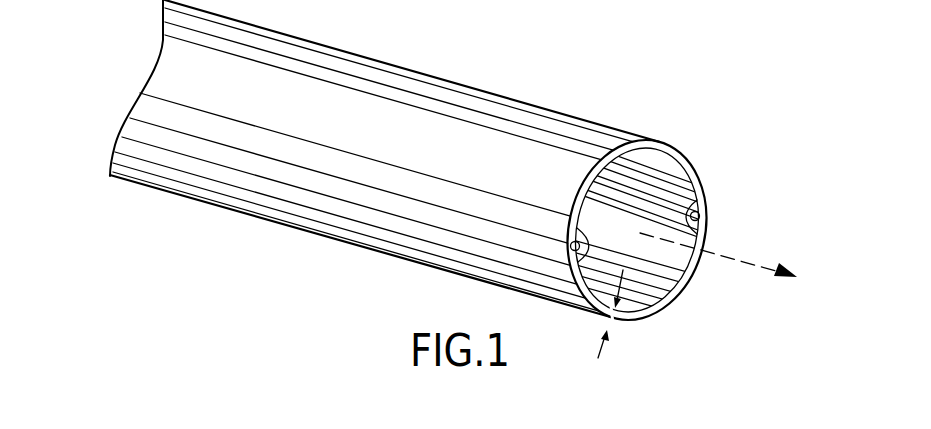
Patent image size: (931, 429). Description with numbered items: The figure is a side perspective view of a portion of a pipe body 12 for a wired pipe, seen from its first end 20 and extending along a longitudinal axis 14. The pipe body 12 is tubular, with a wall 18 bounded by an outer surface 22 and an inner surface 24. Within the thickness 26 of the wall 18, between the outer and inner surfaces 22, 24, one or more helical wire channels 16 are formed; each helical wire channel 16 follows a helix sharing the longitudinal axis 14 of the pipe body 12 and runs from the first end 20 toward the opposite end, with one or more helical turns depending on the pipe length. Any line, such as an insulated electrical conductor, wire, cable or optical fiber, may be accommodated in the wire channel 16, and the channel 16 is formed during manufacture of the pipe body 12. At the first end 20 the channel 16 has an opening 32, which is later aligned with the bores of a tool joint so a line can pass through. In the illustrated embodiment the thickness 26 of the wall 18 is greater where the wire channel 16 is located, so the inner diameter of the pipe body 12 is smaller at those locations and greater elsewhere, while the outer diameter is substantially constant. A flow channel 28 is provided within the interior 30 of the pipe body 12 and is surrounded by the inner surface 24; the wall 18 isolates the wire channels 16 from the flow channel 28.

The pipe body 12 is at (522, 137).
The longitudinal axis 14 is at (758, 262).
The helical wire channel 16 is at (698, 210).
The wall 18 is at (638, 316).
The first end 20 is at (647, 140).
The outer surface 22 is at (385, 107).
The inner surface 24 is at (657, 268).
The thickness 26 is at (612, 318).
The flow channel 28 is at (615, 210).
The interior 30 is at (663, 165).
The opening 32 is at (701, 217).